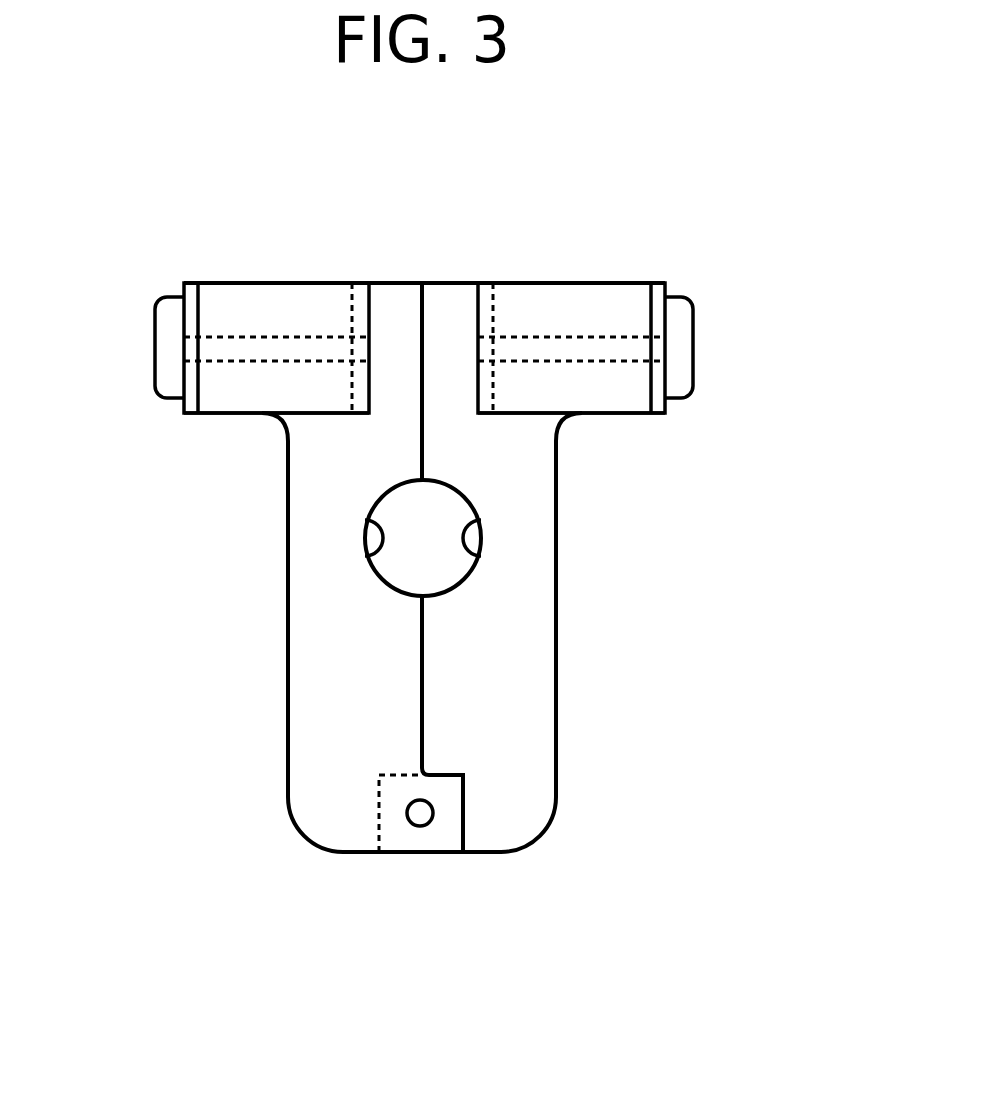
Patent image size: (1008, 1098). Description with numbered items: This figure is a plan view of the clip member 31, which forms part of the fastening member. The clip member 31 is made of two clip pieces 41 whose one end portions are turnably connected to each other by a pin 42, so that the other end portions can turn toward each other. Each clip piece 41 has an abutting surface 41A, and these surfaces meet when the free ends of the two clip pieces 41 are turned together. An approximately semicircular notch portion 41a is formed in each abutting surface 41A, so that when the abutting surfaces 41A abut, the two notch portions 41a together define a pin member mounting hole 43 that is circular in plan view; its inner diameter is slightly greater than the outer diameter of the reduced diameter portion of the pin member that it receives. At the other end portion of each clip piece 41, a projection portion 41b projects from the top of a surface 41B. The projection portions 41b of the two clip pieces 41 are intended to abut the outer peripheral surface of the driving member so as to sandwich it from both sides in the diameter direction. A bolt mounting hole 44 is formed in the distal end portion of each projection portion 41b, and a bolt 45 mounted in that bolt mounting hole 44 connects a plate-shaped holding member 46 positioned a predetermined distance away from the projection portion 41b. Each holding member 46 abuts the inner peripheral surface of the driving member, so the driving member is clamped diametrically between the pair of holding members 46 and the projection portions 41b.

The clip member 31 is at (772, 235).
The clip piece 41 is at (288, 692).
The abutting surface 41A is at (600, 593).
The surface 41B is at (320, 457).
The notch portion 41a is at (363, 518).
The projection portion 41b is at (192, 282).
The pin 42 is at (420, 814).
The pin member mounting hole 43 is at (450, 507).
The bolt mounting hole 44 is at (195, 362).
The bolt 45 is at (163, 318).
The holding member 46 is at (278, 294).